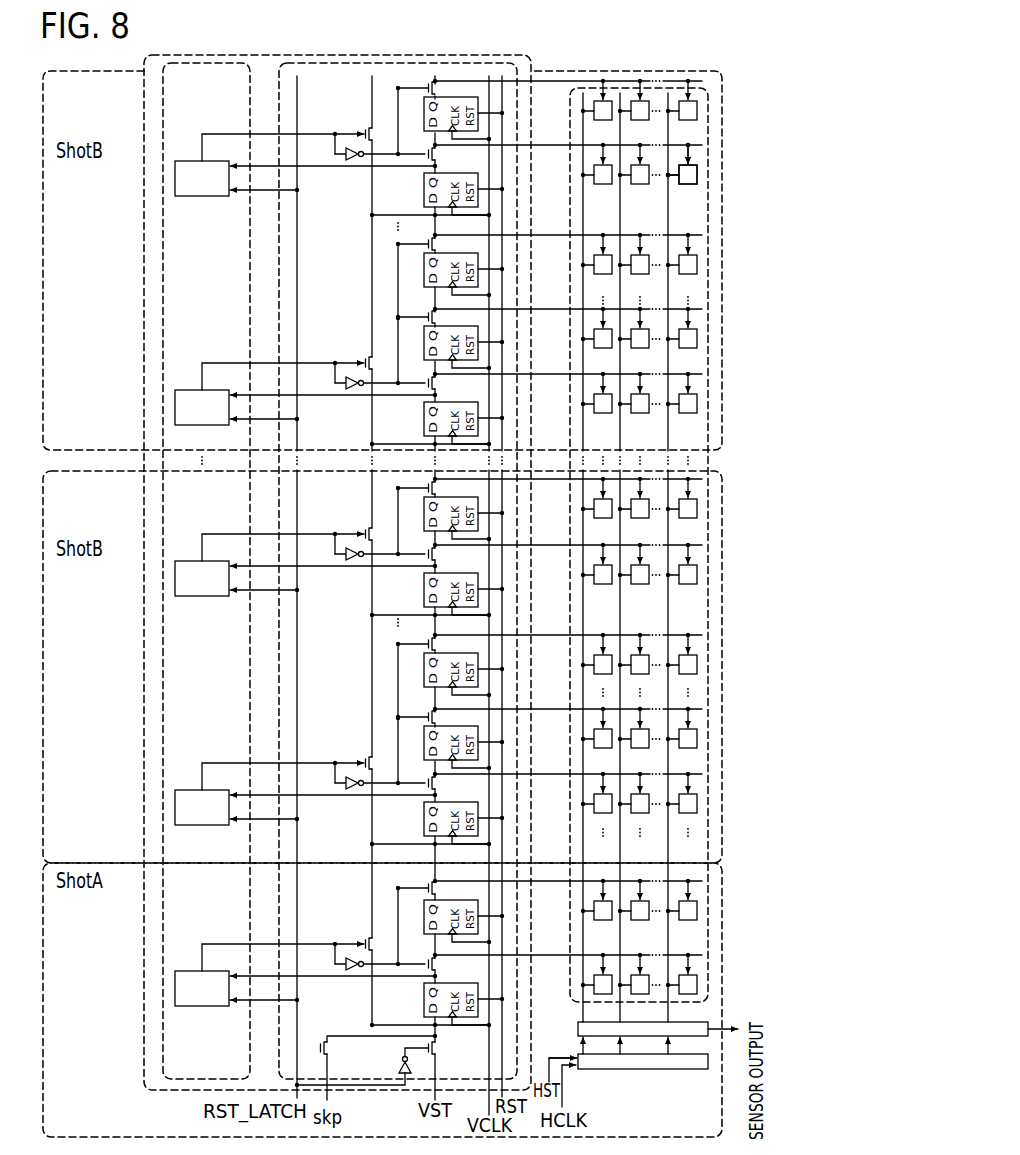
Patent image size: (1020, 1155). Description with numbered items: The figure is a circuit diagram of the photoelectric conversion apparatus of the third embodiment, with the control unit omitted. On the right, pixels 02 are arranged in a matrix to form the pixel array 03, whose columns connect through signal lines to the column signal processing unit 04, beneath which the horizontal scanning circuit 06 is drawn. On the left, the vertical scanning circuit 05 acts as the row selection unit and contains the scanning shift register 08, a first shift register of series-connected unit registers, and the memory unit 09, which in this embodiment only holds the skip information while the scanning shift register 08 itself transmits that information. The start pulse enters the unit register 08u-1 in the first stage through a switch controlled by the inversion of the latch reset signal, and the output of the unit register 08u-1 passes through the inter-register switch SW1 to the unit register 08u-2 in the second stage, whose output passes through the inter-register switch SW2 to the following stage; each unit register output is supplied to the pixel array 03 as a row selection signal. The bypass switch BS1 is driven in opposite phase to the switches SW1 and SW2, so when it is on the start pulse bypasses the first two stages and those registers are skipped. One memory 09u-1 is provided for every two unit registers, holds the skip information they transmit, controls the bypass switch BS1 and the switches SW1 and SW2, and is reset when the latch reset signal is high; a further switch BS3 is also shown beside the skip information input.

The pixel 02 is at (701, 177).
The pixel array 03 is at (684, 69).
The column signal processing unit 04 is at (706, 1021).
The vertical scanning circuit 05 is at (487, 54).
The horizontal scanning circuit 06 is at (628, 1071).
The scanning shift register 08 is at (331, 62).
The memory unit 09 is at (216, 62).
The unit register in the first stage 08u-1 is at (422, 998).
The unit register in the second stage 08u-2 is at (422, 912).
The memory 09u-1 is at (173, 980).
The inter-register switch SW1 is at (422, 967).
The inter-register switch SW2 is at (423, 887).
The bypass switch BS1 is at (357, 942).
The bypass switch BS3 is at (319, 1048).